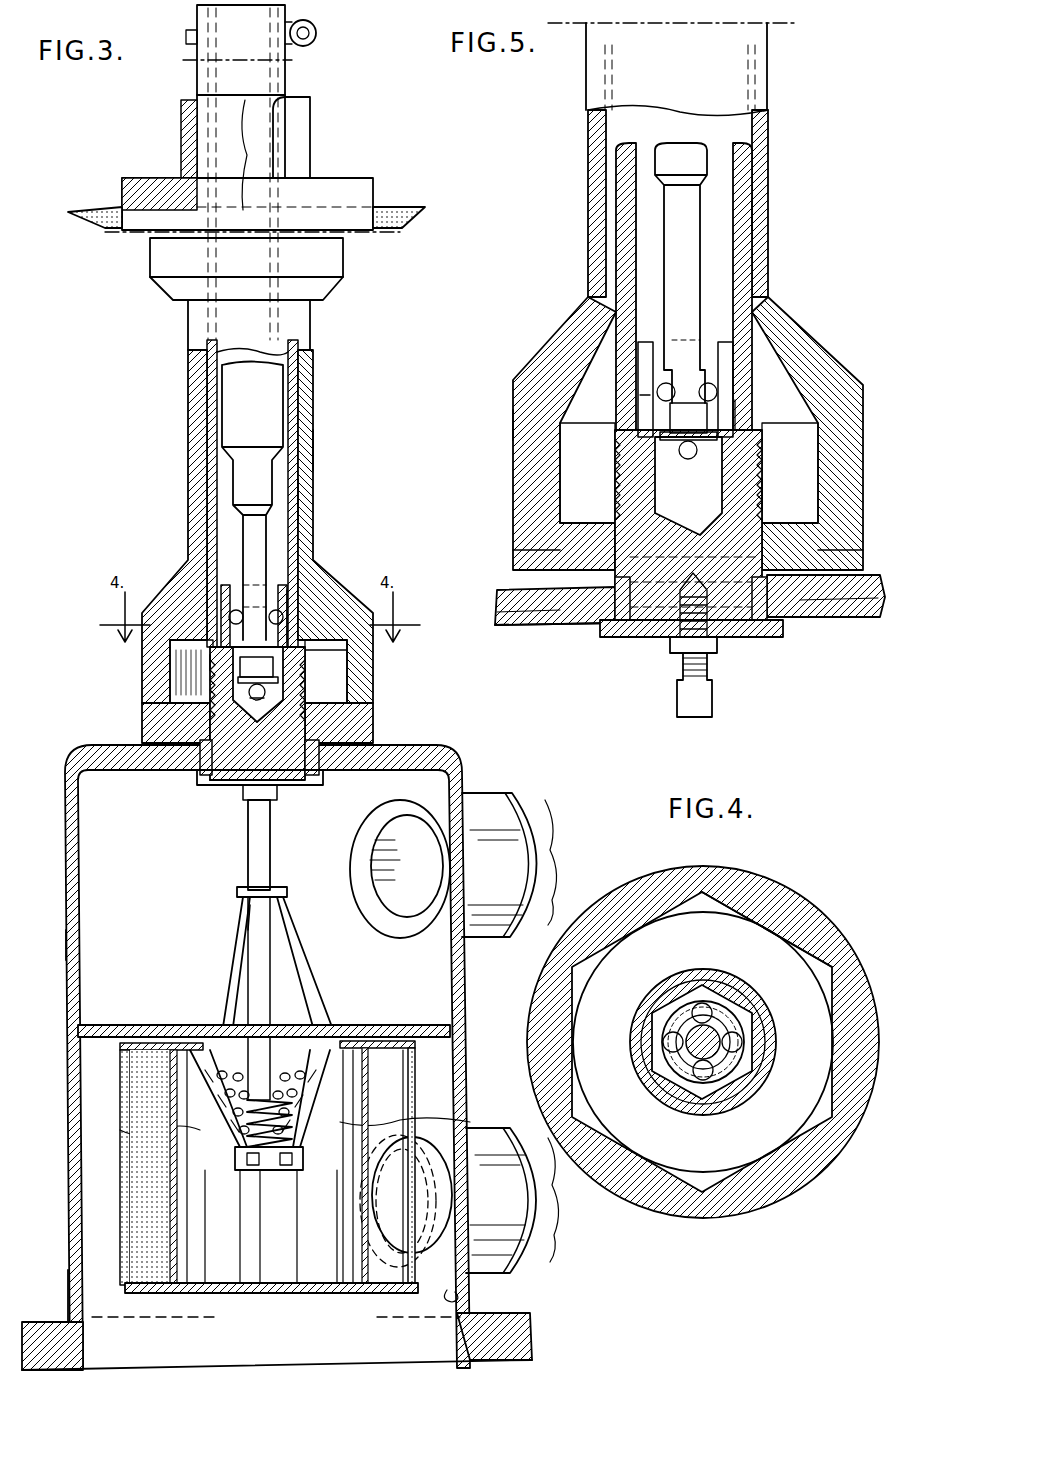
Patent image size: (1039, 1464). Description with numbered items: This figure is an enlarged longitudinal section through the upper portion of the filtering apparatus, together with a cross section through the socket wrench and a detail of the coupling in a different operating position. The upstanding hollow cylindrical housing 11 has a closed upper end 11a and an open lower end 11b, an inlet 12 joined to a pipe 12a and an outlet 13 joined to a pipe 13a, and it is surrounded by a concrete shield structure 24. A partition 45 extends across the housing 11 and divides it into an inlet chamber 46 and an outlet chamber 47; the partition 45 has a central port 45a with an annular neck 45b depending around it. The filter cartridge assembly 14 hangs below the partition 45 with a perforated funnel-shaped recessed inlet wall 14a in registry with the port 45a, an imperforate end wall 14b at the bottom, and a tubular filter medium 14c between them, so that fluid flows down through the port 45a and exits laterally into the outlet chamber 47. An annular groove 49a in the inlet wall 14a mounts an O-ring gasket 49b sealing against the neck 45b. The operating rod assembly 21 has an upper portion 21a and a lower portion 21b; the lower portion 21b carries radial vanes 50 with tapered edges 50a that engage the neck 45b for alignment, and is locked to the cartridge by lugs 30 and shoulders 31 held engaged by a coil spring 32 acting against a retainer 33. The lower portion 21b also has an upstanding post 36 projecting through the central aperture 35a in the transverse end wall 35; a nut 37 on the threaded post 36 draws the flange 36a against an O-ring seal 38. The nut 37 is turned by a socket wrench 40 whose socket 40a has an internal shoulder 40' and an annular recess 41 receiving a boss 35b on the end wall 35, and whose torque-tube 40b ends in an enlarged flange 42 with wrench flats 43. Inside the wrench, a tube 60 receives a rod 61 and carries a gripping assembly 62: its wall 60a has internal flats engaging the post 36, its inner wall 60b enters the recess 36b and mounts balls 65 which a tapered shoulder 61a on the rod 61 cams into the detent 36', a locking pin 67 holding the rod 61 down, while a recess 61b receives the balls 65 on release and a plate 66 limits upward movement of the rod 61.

In FIG. 3, the housing 11 is at (66, 1000).
In FIG. 5, the housing 11 is at (862, 592).
In FIG. 3, the closed upper end 11a is at (95, 752).
In FIG. 5, the closed upper end 11a is at (497, 593).
In FIG. 3, the open lower end 11b is at (70, 1283).
In FIG. 3, the inlet 12 is at (378, 880).
In FIG. 3, the inlet pipe 12a is at (532, 800).
In FIG. 3, the outlet 13 is at (425, 1250).
In FIG. 3, the outlet pipe 13a is at (540, 1262).
In FIG. 3, the filter cartridge assembly 14 is at (120, 1182).
In FIG. 3, the perforated funnel-shaped recessed inlet wall 14a is at (352, 1102).
In FIG. 3, the imperforate end wall 14b is at (255, 1295).
In FIG. 3, the tubular filter medium 14c is at (128, 1292).
In FIG. 3, the operating rod assembly 21 is at (278, 352).
In FIG. 5, the operating rod assembly 21 is at (640, 120).
In FIG. 3, the upper portion of operating rod assembly 21a is at (299, 500).
In FIG. 5, the upper portion of operating rod assembly 21a is at (738, 215).
In FIG. 3, the lower portion of operating rod assembly 21b is at (250, 845).
In FIG. 5, the lower portion of operating rod assembly 21b is at (680, 700).
In FIG. 3, the concrete shield structure 24 is at (95, 215).
In FIG. 3, the lugs 30 is at (292, 1172).
In FIG. 3, the shoulders 31 is at (240, 1180).
In FIG. 3, the coil spring 32 is at (242, 1150).
In FIG. 3, the retainer 33 is at (140, 1100).
In FIG. 3, the transverse end wall 35 is at (126, 772).
In FIG. 5, the transverse end wall 35 is at (540, 618).
In FIG. 3, the central aperture 35a is at (322, 746).
In FIG. 5, the central aperture 35a is at (770, 580).
In FIG. 3, the boss 35b is at (204, 752).
In FIG. 5, the boss 35b is at (622, 583).
In FIG. 3, the post 36 is at (311, 713).
In FIG. 5, the post 36 is at (670, 525).
In FIG. 4, the post 36 is at (738, 1042).
In FIG. 5, the detent 36' is at (617, 406).
In FIG. 4, the detent 36' is at (727, 1017).
In FIG. 3, the shoulder or flange 36a is at (203, 778).
In FIG. 5, the shoulder or flange 36a is at (610, 625).
In FIG. 3, the recess 36b is at (214, 658).
In FIG. 5, the recess 36b is at (722, 496).
In FIG. 3, the nut 37 is at (176, 716).
In FIG. 5, the nut 37 is at (812, 545).
In FIG. 4, the nut 37 is at (690, 1160).
In FIG. 3, the O-ring seal 38 is at (303, 787).
In FIG. 5, the O-ring seal 38 is at (758, 625).
In FIG. 3, the socket wrench 40 is at (257, 526).
In FIG. 5, the socket wrench 40 is at (665, 433).
In FIG. 4, the socket wrench 40 is at (703, 1042).
In FIG. 5, the shoulder 40' is at (509, 425).
In FIG. 3, the socket 40a is at (172, 680).
In FIG. 5, the socket 40a is at (560, 516).
In FIG. 4, the socket 40a is at (655, 925).
In FIG. 3, the torque-tube or extension 40b is at (313, 453).
In FIG. 5, the torque-tube or extension 40b is at (592, 78).
In FIG. 3, the annular recess 41 is at (345, 762).
In FIG. 5, the annular recess 41 is at (862, 617).
In FIG. 3, the enlarged flange 42 is at (352, 186).
In FIG. 3, the wrench flats 43 is at (300, 133).
In FIG. 3, the partition 45 is at (395, 1027).
In FIG. 3, the central port 45a is at (302, 1030).
In FIG. 3, the annular neck 45b is at (208, 1040).
In FIG. 3, the inlet chamber 46 is at (70, 940).
In FIG. 3, the outlet chamber 47 is at (470, 1300).
In FIG. 3, the annular groove 49a is at (188, 1045).
In FIG. 3, the O-ring gasket 49b is at (378, 1050).
In FIG. 3, the vanes 50 is at (240, 960).
In FIG. 3, the tapered edge 50a is at (290, 947).
In FIG. 3, the tube 60 is at (200, 95).
In FIG. 5, the tube 60 is at (615, 272).
In FIG. 3, the wall with internal flats 60a is at (290, 618).
In FIG. 5, the wall with internal flats 60a is at (738, 437).
In FIG. 4, the wall with internal flats 60a is at (758, 1060).
In FIG. 3, the inner wall 60b is at (222, 600).
In FIG. 5, the inner wall 60b is at (640, 357).
In FIG. 4, the inner wall 60b is at (665, 1030).
In FIG. 3, the rod 61 is at (252, 501).
In FIG. 5, the rod 61 is at (702, 165).
In FIG. 4, the rod 61 is at (690, 1058).
In FIG. 3, the tapered shoulder 61a is at (326, 661).
In FIG. 5, the tapered shoulder 61a is at (652, 402).
In FIG. 5, the recess 61b is at (681, 330).
In FIG. 3, the gripping assembly 62 is at (275, 575).
In FIG. 5, the gripping assembly 62 is at (688, 436).
In FIG. 4, the gripping assembly 62 is at (718, 1068).
In FIG. 3, the balls 65 is at (256, 617).
In FIG. 5, the balls 65 is at (718, 396).
In FIG. 4, the balls 65 is at (704, 1003).
In FIG. 3, the plate 66 is at (243, 713).
In FIG. 5, the plate 66 is at (674, 472).
In FIG. 3, the locking pin 67 is at (318, 36).